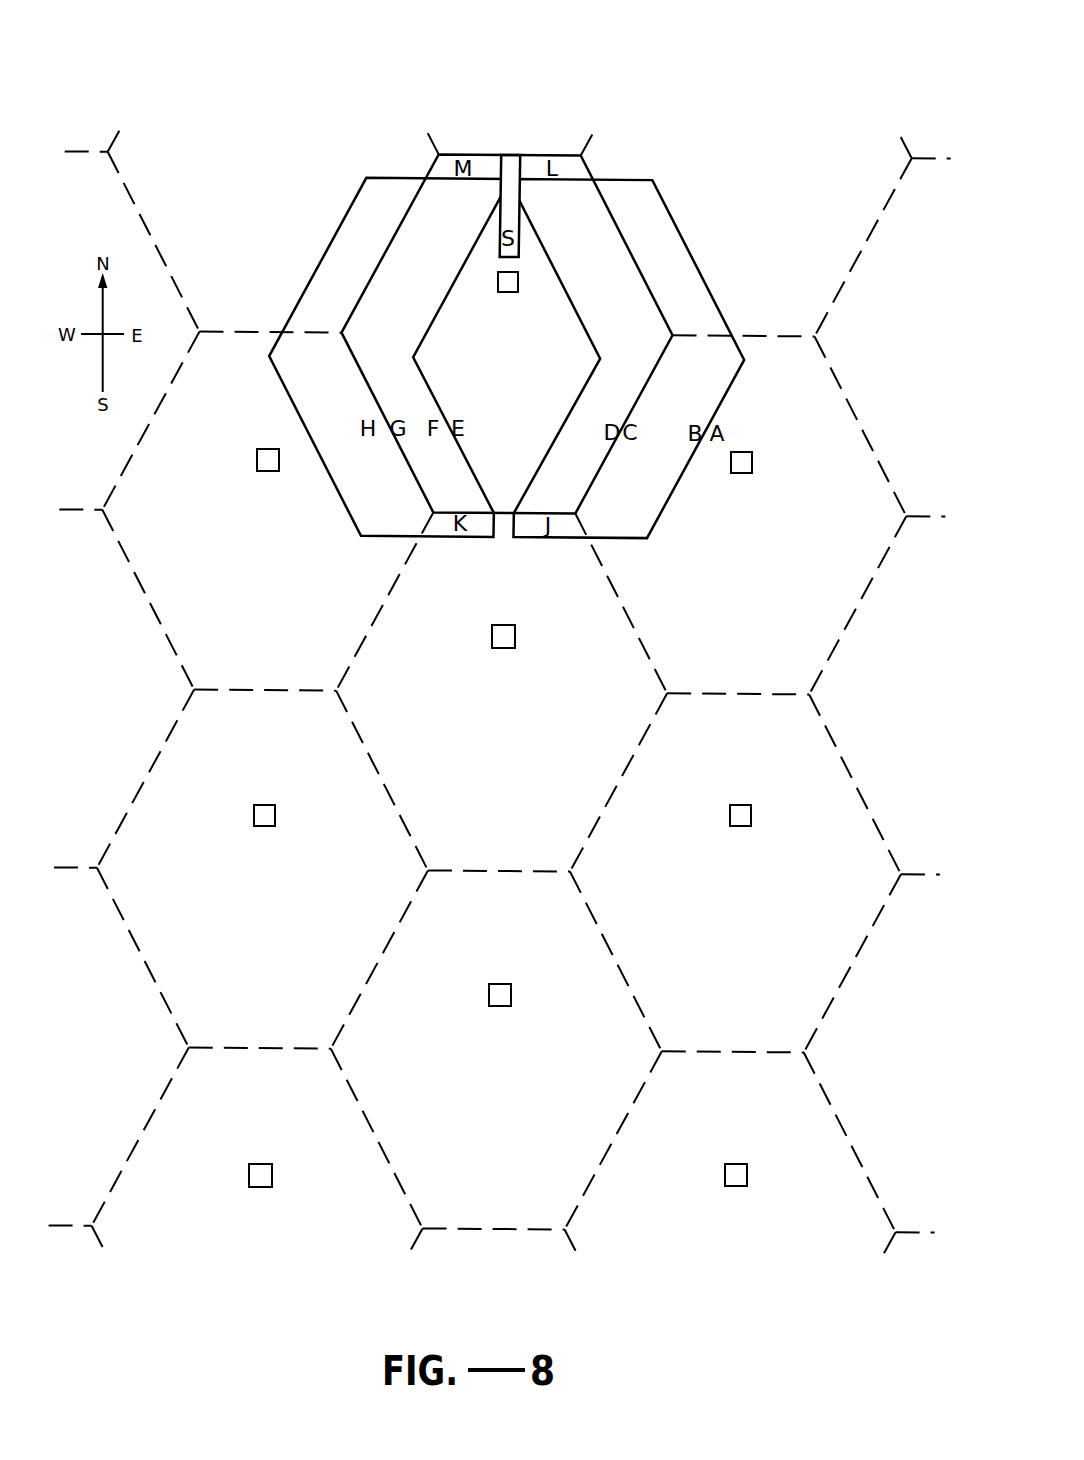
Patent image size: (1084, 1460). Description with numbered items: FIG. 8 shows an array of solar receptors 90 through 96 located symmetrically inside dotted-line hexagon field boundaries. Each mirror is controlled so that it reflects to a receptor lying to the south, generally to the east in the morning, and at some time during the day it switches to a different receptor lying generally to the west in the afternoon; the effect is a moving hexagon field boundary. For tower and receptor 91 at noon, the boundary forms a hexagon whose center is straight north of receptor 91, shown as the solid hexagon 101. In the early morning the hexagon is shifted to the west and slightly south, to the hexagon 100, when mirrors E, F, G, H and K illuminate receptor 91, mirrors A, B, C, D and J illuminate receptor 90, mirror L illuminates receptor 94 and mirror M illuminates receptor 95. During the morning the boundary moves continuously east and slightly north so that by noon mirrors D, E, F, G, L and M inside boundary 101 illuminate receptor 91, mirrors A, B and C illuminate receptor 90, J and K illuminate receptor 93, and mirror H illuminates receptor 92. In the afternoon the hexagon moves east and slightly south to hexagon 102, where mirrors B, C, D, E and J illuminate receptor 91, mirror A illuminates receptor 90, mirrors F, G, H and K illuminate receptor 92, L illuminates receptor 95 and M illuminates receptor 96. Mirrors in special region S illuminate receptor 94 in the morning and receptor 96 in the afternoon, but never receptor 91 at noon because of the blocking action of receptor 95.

The solar receptor 90 is at (746, 822).
The tower and receptor 91 is at (510, 643).
The solar receptor 92 is at (269, 823).
The solar receptor 93 is at (503, 1000).
The solar receptor 94 is at (745, 470).
The solar receptor 95 is at (512, 289).
The solar receptor 96 is at (270, 463).
The early morning hexagon field boundary 100 is at (329, 232).
The noon hexagon field boundary 101 is at (637, 46).
The late afternoon hexagon field boundary 102 is at (676, 197).